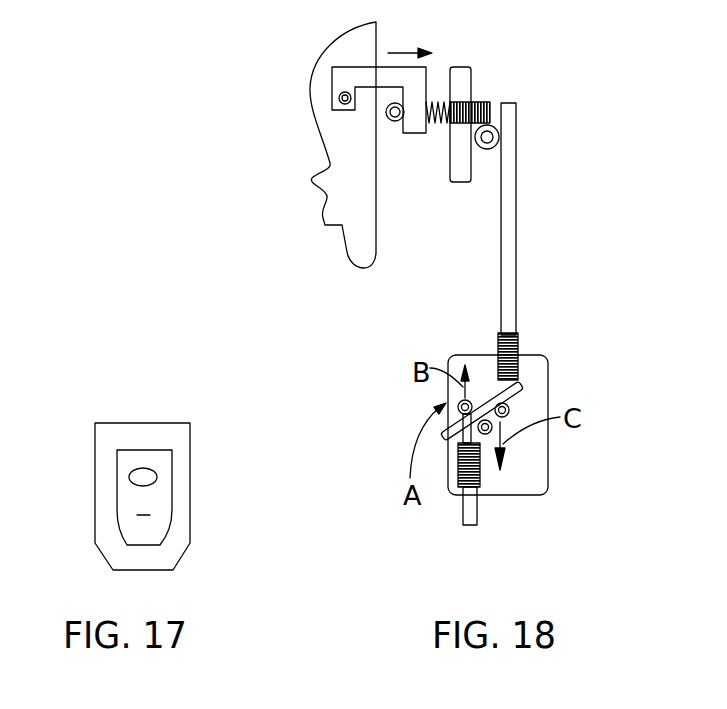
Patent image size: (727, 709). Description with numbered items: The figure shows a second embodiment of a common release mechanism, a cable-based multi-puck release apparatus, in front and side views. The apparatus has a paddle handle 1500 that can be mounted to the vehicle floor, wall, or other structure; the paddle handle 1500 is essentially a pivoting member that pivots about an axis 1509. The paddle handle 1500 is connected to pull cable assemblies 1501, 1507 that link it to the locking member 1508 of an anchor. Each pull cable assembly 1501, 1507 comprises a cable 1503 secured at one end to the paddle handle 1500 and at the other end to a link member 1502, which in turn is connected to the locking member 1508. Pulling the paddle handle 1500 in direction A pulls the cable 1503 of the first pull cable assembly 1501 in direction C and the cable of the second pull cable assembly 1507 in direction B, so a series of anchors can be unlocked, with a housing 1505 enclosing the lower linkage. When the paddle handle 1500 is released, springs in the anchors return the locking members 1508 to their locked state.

In FIG. 17, the paddle handle 1500 is at (125, 508).
In FIG. 18, the paddle handle 1500 is at (448, 445).
In FIG. 18, the pull cable assembly 1501 is at (500, 136).
In FIG. 18, the link member 1502 is at (340, 83).
In FIG. 18, the cable 1503 is at (508, 240).
In FIG. 18, the housing 1505 is at (519, 393).
In FIG. 18, the pull cable assembly 1507 is at (473, 505).
In FIG. 18, the locking member 1508 is at (328, 200).
In FIG. 18, the axis 1509 is at (482, 403).